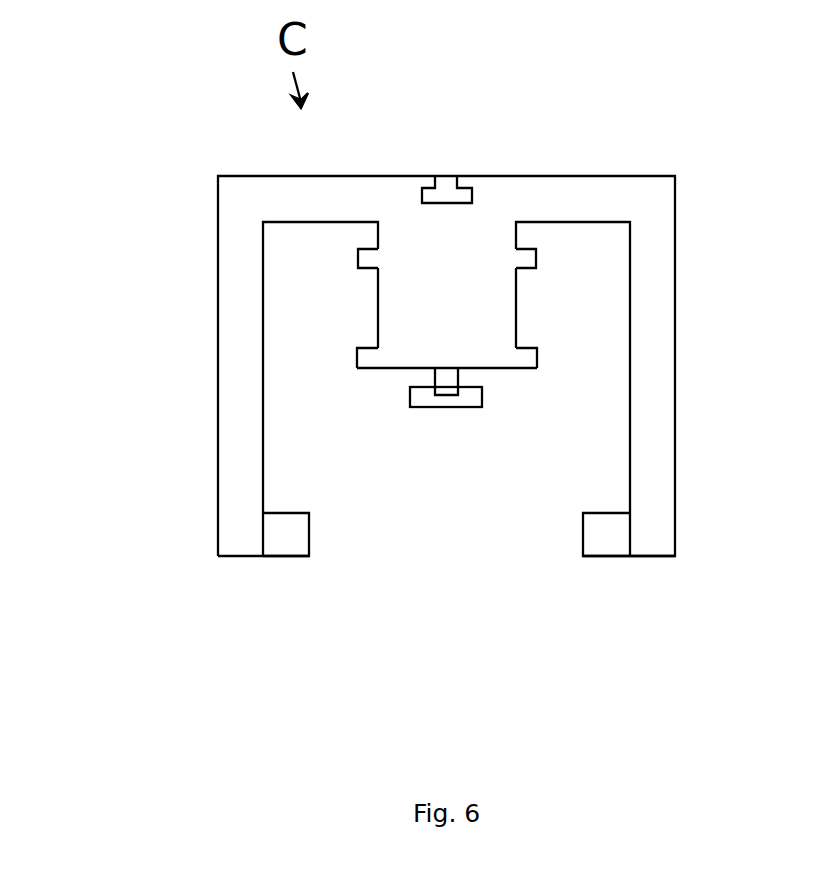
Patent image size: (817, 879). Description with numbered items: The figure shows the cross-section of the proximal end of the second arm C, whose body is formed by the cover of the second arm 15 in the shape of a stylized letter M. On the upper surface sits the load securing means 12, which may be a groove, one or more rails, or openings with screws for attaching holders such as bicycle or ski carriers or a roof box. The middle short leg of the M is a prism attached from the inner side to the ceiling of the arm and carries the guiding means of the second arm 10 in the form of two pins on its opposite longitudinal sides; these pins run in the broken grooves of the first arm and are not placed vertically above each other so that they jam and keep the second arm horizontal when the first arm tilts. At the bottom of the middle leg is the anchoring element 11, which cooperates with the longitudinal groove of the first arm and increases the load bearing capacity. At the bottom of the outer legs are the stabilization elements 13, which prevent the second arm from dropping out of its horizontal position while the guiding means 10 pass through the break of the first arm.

The cover of the second arm 15 is at (228, 197).
The guiding means of the second arm 10 is at (368, 259).
The load securing means 12 is at (445, 176).
The anchoring element 11 is at (447, 407).
The stabilization element 13 is at (293, 538).